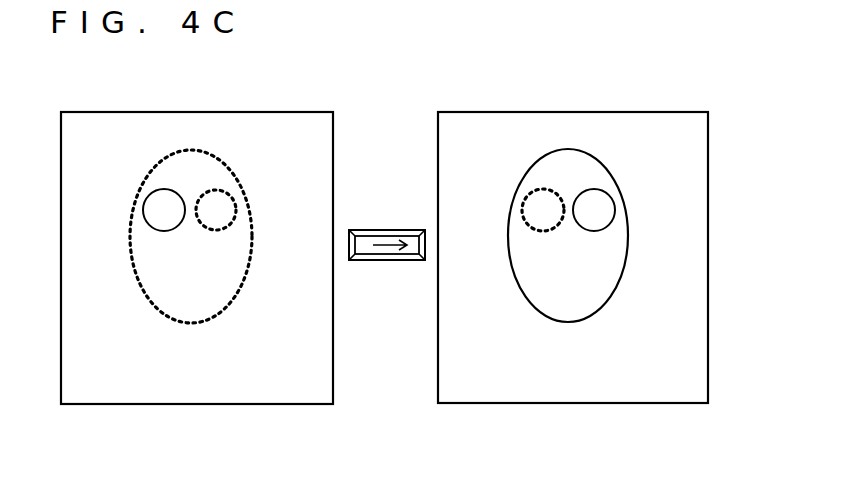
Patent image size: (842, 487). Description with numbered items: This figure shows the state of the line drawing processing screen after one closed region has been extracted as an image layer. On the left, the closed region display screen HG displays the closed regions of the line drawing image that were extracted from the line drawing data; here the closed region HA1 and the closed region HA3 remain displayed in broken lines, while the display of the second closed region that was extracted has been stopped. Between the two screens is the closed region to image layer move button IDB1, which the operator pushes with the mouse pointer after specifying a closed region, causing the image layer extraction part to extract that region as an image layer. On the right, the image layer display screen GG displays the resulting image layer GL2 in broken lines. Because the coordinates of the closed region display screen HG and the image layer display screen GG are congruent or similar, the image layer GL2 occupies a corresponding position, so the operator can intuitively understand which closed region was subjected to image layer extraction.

The closed region display screen HG is at (157, 118).
The closed region HA1 is at (222, 163).
The closed region HA3 is at (237, 193).
The closed region to image layer move button IDB1 is at (362, 250).
The image layer display screen GG is at (477, 122).
The image layer GL2 is at (542, 188).